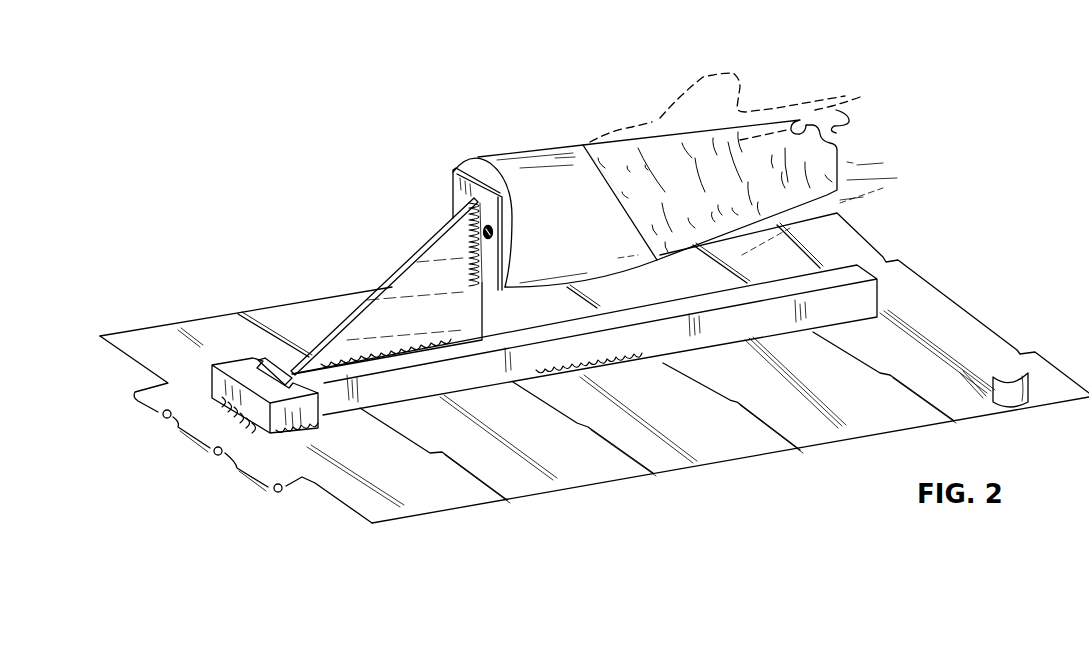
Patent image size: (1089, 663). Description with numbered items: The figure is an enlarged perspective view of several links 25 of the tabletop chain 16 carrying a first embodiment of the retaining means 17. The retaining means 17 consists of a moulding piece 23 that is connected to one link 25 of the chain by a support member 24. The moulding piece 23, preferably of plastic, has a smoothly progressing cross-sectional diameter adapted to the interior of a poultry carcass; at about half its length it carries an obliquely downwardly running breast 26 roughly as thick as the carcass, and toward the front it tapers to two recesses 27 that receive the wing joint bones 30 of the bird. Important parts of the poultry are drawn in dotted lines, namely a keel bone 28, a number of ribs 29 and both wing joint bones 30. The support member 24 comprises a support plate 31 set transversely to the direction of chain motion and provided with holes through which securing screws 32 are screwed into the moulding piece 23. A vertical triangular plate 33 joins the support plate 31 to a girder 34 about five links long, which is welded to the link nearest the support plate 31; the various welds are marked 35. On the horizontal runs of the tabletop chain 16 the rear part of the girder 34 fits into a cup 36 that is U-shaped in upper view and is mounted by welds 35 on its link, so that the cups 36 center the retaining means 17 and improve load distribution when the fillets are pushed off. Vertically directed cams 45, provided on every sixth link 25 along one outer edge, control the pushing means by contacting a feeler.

The tabletop chain 16 is at (990, 307).
The retaining means 17 is at (442, 149).
The moulding piece 23 is at (516, 134).
The support member 24 is at (335, 290).
The link 25 is at (710, 457).
The breast 26 is at (583, 145).
The recesses 27 is at (798, 126).
The keel bone 28 is at (719, 97).
The ribs 29 is at (763, 162).
The wing joint bones 30 is at (837, 108).
The support plate 31 is at (462, 188).
The securing screws 32 is at (494, 232).
The vertical triangular plate 33 is at (400, 297).
The girder 34 is at (678, 338).
The welds 35 is at (470, 240).
The cups 36 is at (237, 370).
The cams 45 is at (1013, 400).